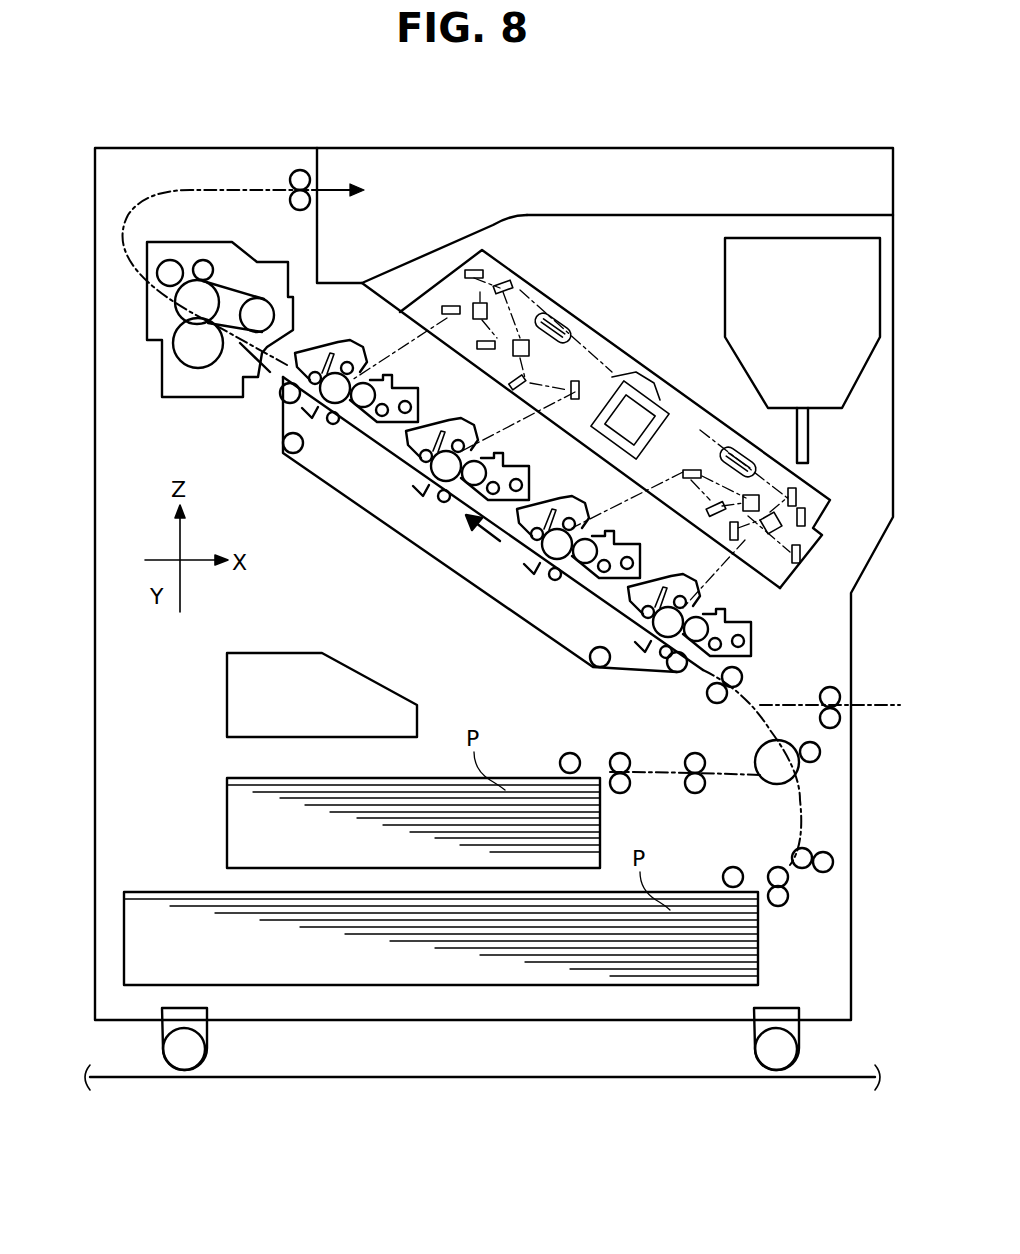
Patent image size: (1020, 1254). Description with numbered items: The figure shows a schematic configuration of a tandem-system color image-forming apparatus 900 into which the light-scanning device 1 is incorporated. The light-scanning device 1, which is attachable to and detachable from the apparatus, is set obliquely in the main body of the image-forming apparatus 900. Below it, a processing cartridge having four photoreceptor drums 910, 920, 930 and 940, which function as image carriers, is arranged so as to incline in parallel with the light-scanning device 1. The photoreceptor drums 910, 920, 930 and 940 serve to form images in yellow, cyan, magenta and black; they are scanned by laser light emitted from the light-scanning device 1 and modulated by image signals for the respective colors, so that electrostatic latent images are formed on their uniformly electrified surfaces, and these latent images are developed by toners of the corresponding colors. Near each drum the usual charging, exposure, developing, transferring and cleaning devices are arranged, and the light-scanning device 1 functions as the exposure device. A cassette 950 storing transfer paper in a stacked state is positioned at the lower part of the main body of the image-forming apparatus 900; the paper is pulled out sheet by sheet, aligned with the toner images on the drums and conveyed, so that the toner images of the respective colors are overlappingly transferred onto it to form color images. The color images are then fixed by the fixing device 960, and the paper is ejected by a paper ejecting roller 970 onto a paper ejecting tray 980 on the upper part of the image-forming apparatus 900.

The image-forming apparatus 900 is at (95, 630).
The photoreceptor drum 910 is at (650, 615).
The photoreceptor drum 920 is at (535, 547).
The photoreceptor drum 930 is at (425, 471).
The photoreceptor drum 940 is at (310, 392).
The cassette 950 is at (227, 828).
The fixing device 960 is at (145, 357).
The paper ejecting roller 970 is at (292, 167).
The paper ejecting tray 980 is at (640, 215).
The light-scanning device 1 is at (592, 328).